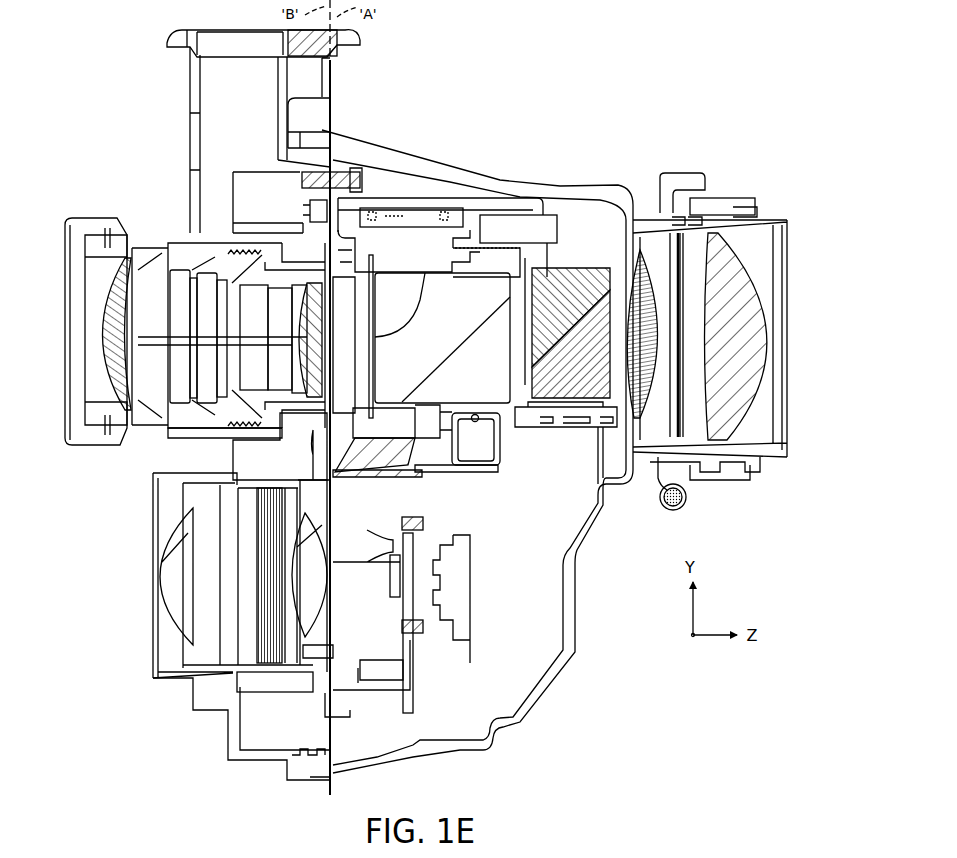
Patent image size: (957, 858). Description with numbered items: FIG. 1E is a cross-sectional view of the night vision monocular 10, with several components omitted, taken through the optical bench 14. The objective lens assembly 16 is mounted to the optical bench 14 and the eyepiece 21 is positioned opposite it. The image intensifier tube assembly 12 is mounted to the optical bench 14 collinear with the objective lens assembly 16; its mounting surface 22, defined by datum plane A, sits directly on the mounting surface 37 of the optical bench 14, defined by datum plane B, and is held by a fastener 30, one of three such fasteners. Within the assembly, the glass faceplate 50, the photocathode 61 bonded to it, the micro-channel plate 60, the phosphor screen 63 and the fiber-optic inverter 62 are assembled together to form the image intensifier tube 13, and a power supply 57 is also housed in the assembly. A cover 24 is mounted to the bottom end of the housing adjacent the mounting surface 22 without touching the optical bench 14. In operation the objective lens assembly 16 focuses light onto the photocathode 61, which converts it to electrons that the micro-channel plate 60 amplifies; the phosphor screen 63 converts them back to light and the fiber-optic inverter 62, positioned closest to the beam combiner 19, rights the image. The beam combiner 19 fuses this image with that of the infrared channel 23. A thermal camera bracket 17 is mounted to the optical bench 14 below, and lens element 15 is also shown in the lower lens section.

The night vision monocular 10 is at (576, 92).
The image intensifier tube assembly 12 is at (463, 325).
The image intensifier tube 13 is at (497, 272).
The optical bench 14 is at (280, 154).
The lower lens unit 15 is at (350, 635).
The objective lens assembly 16 is at (82, 333).
The thermal camera bracket 17 is at (350, 683).
The beam combiner 19 is at (568, 283).
The eyepiece 21 is at (763, 393).
The mounting surface 22 is at (310, 192).
The infrared channel 23 is at (402, 587).
The cover 24 is at (327, 443).
The fastener 30 is at (350, 172).
The mounting surface 37 is at (332, 168).
The glass faceplate 50 is at (337, 382).
The power supply 57 is at (373, 462).
The micro-channel plate 60 is at (335, 348).
The photocathode 61 is at (335, 293).
The fiber-optic inverter 62 is at (487, 387).
The phosphor screen 63 is at (462, 266).